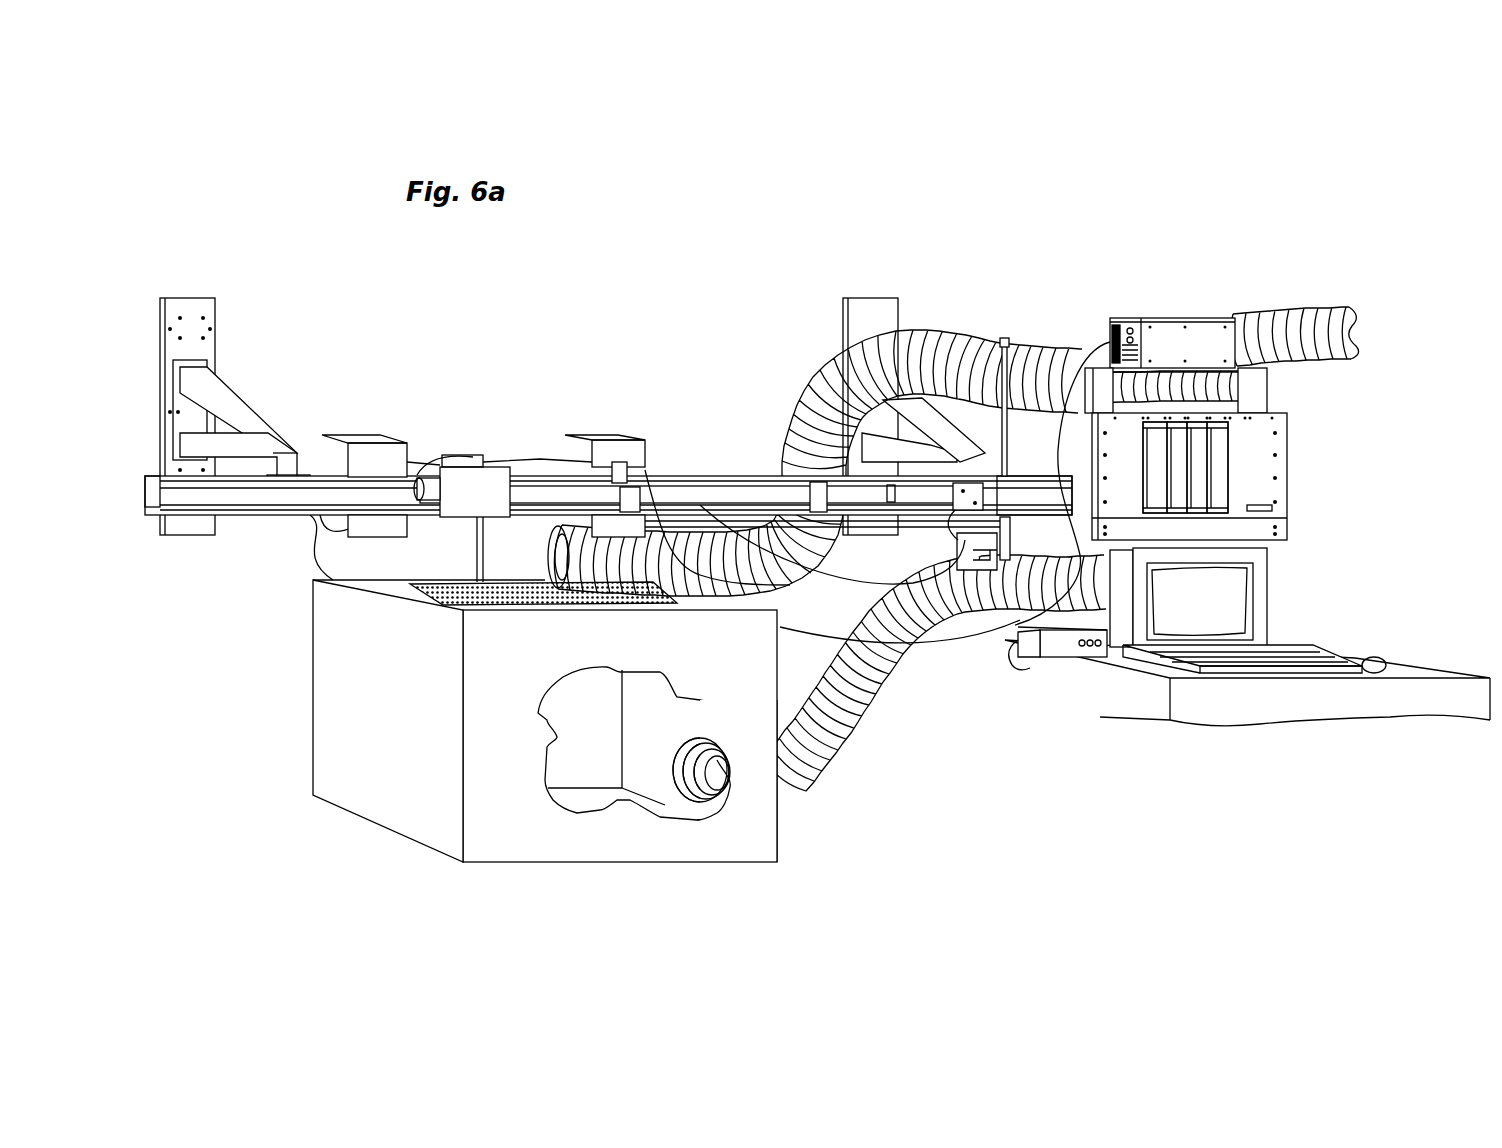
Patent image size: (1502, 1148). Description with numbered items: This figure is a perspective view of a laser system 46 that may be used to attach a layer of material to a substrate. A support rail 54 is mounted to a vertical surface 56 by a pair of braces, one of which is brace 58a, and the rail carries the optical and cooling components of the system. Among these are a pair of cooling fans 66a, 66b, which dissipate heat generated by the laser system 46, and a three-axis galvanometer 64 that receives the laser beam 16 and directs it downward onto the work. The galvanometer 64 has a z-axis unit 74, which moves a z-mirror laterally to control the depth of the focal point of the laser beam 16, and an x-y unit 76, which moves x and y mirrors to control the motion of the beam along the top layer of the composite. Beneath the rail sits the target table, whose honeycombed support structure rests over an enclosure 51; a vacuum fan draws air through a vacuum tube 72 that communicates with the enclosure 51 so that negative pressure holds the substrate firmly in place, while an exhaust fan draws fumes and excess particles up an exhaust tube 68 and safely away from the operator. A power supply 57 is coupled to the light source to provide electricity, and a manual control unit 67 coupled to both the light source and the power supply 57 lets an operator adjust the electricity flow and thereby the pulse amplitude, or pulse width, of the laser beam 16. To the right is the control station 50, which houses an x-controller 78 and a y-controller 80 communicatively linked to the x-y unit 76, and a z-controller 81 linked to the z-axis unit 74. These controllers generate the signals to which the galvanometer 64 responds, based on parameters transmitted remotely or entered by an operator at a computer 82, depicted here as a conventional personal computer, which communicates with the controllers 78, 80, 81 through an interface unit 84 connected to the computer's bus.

The laser beam 16 is at (477, 543).
The laser system 46 is at (913, 277).
The control station 50 is at (1307, 543).
The enclosure 51 is at (593, 733).
The support rail 54 is at (252, 497).
The vertical surface 56 is at (802, 358).
The power supply 57 is at (1183, 340).
The brace 58a is at (240, 413).
The three-axis galvanometer 64 is at (642, 423).
The cooling fan 66a is at (378, 465).
The cooling fan 66b is at (613, 447).
The manual control unit 67 is at (1045, 647).
The exhaust tube 68 is at (987, 357).
The vacuum tube 72 is at (870, 727).
The z-axis unit 74 is at (703, 497).
The x-y unit 76 is at (485, 493).
The x-controller 78 is at (1173, 490).
The y-controller 80 is at (1217, 447).
The z-controller 81 is at (1195, 477).
The computer 82 is at (1290, 630).
The interface unit 84 is at (1153, 437).